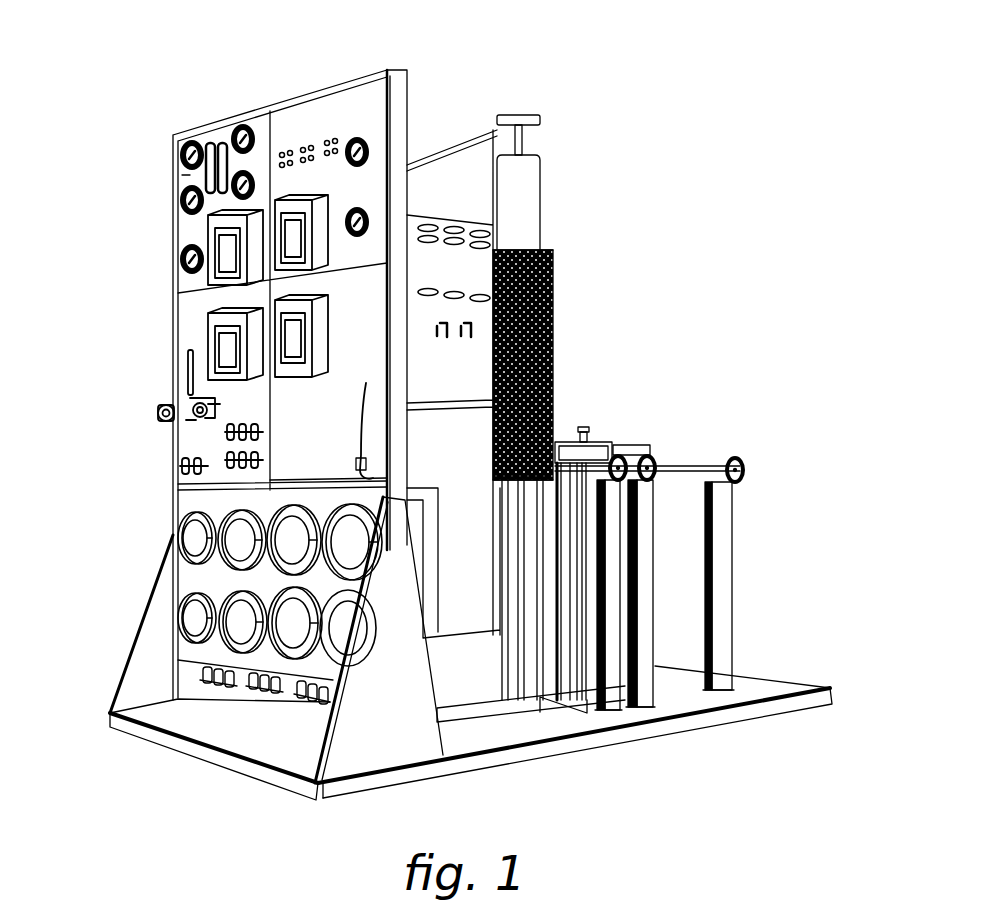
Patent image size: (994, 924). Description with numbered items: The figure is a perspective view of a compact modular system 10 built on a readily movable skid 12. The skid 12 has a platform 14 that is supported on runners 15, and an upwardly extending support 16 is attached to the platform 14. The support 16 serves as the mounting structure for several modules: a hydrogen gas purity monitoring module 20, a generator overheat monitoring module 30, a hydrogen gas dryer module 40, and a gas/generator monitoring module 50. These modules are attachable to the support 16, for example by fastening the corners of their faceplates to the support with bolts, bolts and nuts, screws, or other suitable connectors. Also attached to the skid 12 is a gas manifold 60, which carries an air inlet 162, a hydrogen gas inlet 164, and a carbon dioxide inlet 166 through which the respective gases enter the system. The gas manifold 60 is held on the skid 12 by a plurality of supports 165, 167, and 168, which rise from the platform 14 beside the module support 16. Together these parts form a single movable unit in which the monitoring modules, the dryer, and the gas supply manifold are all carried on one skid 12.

The modular system 10 is at (650, 104).
The skid 12 is at (134, 742).
The platform 14 is at (213, 755).
The runners 15 is at (523, 755).
The upwardly extending support 16 is at (400, 117).
The hydrogen gas purity monitoring module 20 is at (190, 330).
The generator overheat monitoring module 30 is at (330, 430).
The hydrogen gas dryer module 40 is at (182, 175).
The gas/generator monitoring module 50 is at (347, 97).
The gas manifold 60 is at (703, 391).
The air inlet 162 is at (618, 443).
The hydrogen gas inlet 164 is at (651, 457).
The support 165 is at (720, 533).
The carbon dioxide inlet 166 is at (739, 458).
The support 167 is at (643, 600).
The support 168 is at (608, 660).